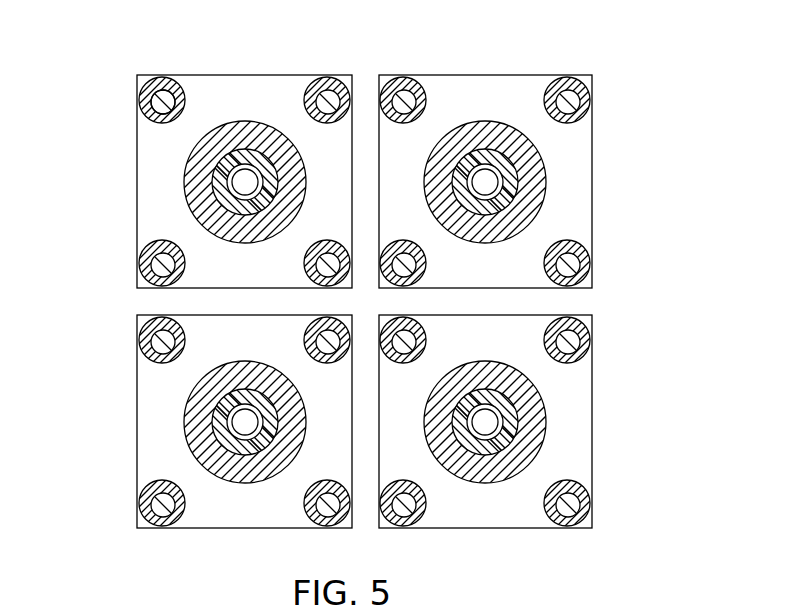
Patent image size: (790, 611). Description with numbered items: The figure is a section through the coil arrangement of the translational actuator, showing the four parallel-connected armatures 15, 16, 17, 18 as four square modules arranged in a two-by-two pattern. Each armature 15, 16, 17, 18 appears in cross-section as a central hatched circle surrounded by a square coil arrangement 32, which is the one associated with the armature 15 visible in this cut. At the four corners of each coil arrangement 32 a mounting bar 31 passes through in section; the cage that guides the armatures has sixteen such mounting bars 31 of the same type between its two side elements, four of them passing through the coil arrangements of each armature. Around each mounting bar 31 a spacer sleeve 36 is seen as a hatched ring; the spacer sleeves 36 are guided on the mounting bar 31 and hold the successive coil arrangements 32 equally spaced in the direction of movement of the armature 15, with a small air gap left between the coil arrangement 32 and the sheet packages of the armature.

The armature 15 is at (183, 198).
The armature 16 is at (547, 180).
The armature 17 is at (183, 428).
The armature 18 is at (547, 420).
The mounting bar 31 is at (167, 88).
The coil arrangement 32 is at (247, 93).
The spacer sleeve 36 is at (147, 85).